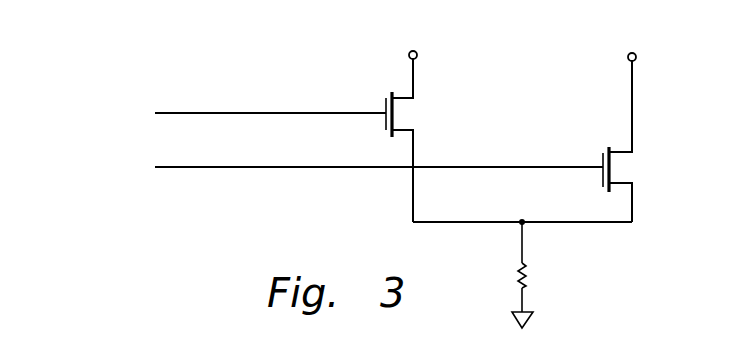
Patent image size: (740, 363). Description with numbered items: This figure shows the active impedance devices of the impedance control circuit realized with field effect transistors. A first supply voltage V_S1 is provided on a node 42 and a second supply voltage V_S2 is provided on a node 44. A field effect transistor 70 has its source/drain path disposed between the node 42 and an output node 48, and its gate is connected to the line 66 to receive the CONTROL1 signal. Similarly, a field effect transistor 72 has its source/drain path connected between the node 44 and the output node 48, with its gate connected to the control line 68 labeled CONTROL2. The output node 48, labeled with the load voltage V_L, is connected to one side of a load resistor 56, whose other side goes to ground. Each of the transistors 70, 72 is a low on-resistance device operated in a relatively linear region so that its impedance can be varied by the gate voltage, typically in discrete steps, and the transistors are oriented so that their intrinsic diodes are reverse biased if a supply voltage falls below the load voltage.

The node 42 is at (415, 73).
The node 44 is at (633, 75).
The output node 48 is at (523, 226).
The load resistor 56 is at (517, 277).
The line 66 is at (282, 112).
The control line 68 is at (280, 169).
The field effect transistor 70 is at (385, 103).
The field effect transistor 72 is at (602, 155).